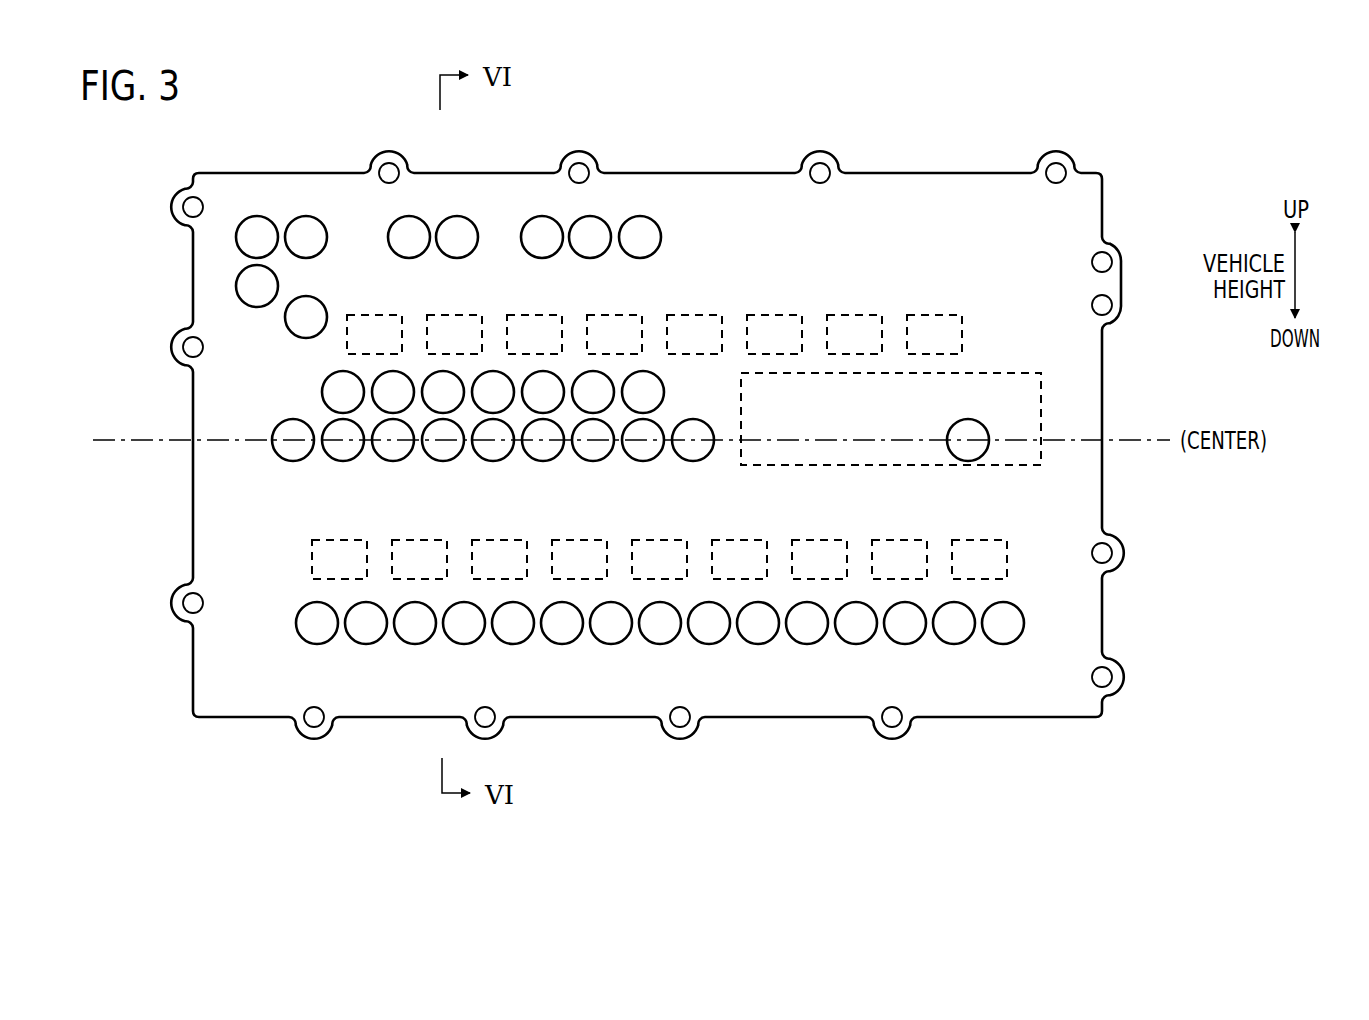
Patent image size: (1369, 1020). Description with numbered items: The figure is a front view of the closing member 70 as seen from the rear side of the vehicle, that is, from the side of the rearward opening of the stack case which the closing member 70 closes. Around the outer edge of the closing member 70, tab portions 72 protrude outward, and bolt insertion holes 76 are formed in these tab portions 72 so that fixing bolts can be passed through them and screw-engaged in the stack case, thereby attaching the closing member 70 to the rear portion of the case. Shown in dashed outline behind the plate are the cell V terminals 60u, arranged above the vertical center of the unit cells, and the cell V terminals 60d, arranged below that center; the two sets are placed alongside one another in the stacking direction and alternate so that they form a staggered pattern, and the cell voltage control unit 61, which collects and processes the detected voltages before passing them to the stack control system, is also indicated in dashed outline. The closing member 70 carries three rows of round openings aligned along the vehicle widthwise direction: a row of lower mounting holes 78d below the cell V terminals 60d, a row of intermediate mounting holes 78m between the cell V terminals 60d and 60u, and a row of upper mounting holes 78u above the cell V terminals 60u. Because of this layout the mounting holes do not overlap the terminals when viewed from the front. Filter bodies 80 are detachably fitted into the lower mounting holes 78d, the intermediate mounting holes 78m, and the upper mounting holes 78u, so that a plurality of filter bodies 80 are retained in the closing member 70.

The closing member 70 is at (963, 187).
The tab portions 72 is at (399, 162).
The bolt insertion holes 76 is at (390, 171).
The filter bodies 80 is at (601, 253).
The upper mounting holes 78u is at (587, 242).
The intermediate mounting holes 78m is at (633, 393).
The lower mounting holes 78d is at (553, 630).
The cell V terminals 60u is at (376, 316).
The cell V terminals 60d is at (338, 541).
The cell voltage control unit 61 is at (992, 372).